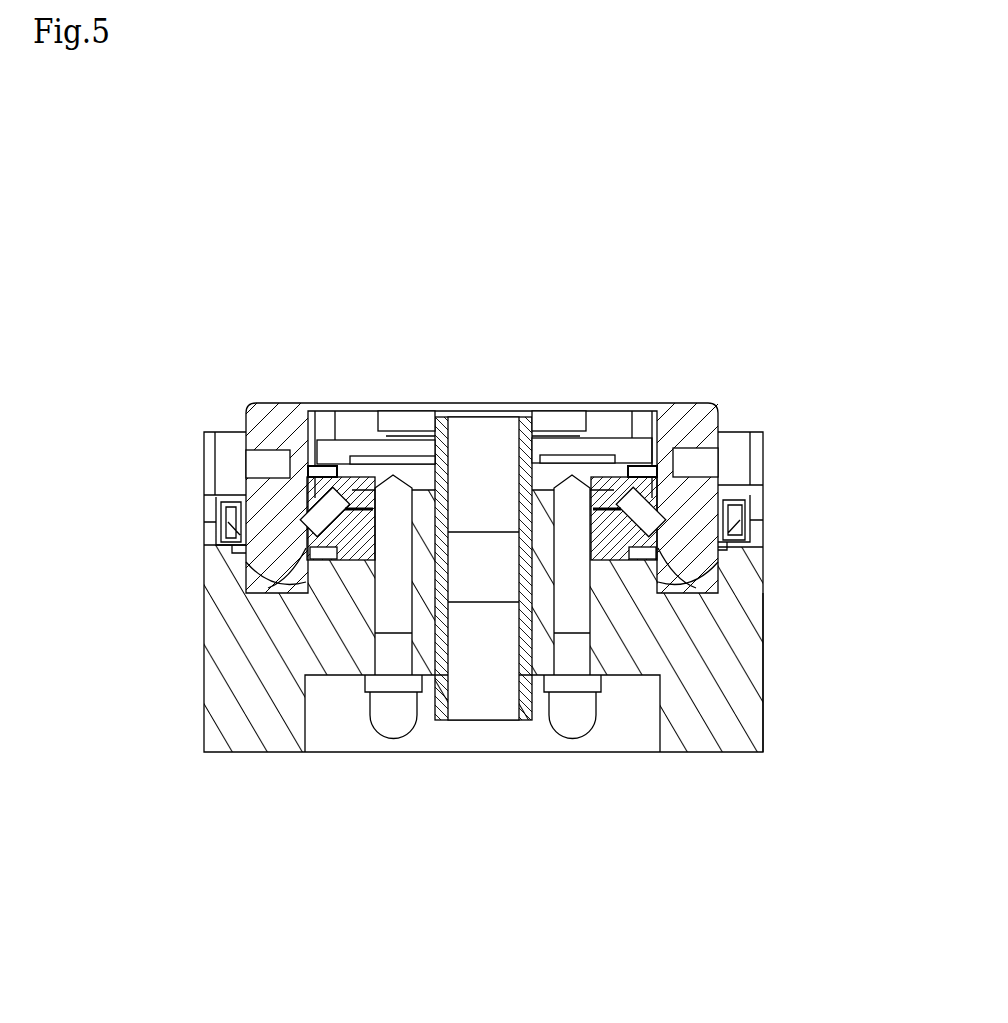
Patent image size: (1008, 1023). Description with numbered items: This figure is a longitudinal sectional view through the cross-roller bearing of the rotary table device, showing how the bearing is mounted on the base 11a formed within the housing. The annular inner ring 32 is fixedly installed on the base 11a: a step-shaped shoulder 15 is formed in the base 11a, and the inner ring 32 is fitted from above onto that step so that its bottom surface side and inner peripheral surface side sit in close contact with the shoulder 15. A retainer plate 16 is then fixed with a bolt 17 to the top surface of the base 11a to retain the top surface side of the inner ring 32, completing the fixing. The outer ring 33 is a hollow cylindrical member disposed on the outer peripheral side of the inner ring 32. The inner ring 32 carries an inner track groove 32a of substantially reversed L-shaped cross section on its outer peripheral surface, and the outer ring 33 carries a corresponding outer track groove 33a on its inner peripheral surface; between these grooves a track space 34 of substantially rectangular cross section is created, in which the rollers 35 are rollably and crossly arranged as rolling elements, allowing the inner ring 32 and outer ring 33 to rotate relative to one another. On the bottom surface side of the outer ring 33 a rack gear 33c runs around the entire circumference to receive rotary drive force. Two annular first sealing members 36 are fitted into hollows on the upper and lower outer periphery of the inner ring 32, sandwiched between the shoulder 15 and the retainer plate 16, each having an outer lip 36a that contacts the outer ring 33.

The base 11a is at (763, 737).
The shoulder 15 is at (362, 540).
The retainer plate 16 is at (620, 450).
The bolt 17 is at (569, 423).
The inner ring 32 is at (654, 670).
The inner track groove 32a is at (632, 552).
The outer ring 33 is at (554, 415).
The outer track groove 33a is at (720, 481).
The rack gear 33c is at (745, 632).
The track space 34 is at (372, 453).
The rollers 35 is at (733, 548).
The first sealing member 36 is at (251, 533).
The outer lip 36a is at (308, 468).